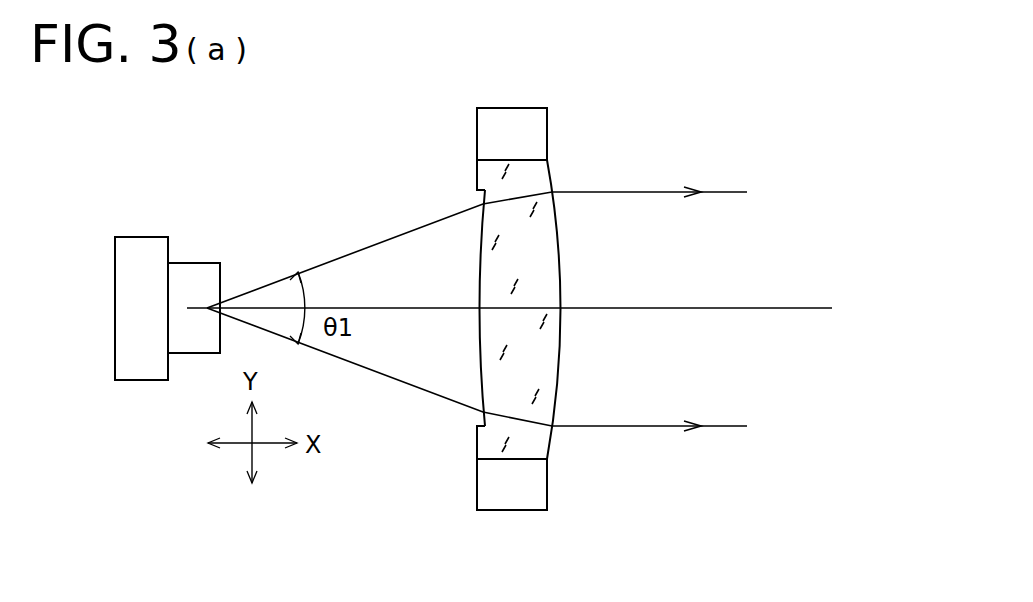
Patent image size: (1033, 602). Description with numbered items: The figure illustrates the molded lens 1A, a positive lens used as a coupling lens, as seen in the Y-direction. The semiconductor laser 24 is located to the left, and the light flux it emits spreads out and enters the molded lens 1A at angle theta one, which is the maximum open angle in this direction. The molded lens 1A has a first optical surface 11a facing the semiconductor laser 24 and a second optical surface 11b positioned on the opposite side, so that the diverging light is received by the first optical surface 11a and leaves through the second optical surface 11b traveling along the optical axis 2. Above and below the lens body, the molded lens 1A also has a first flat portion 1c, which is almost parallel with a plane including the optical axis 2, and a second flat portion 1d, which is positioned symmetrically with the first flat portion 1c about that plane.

The semiconductor laser 24 is at (190, 262).
The optical axis 2 is at (731, 308).
The molded lens 1A is at (515, 291).
The second flat portion 1d is at (513, 160).
The first flat portion 1c is at (513, 459).
The first optical surface 11a is at (477, 278).
The second optical surface 11b is at (565, 252).